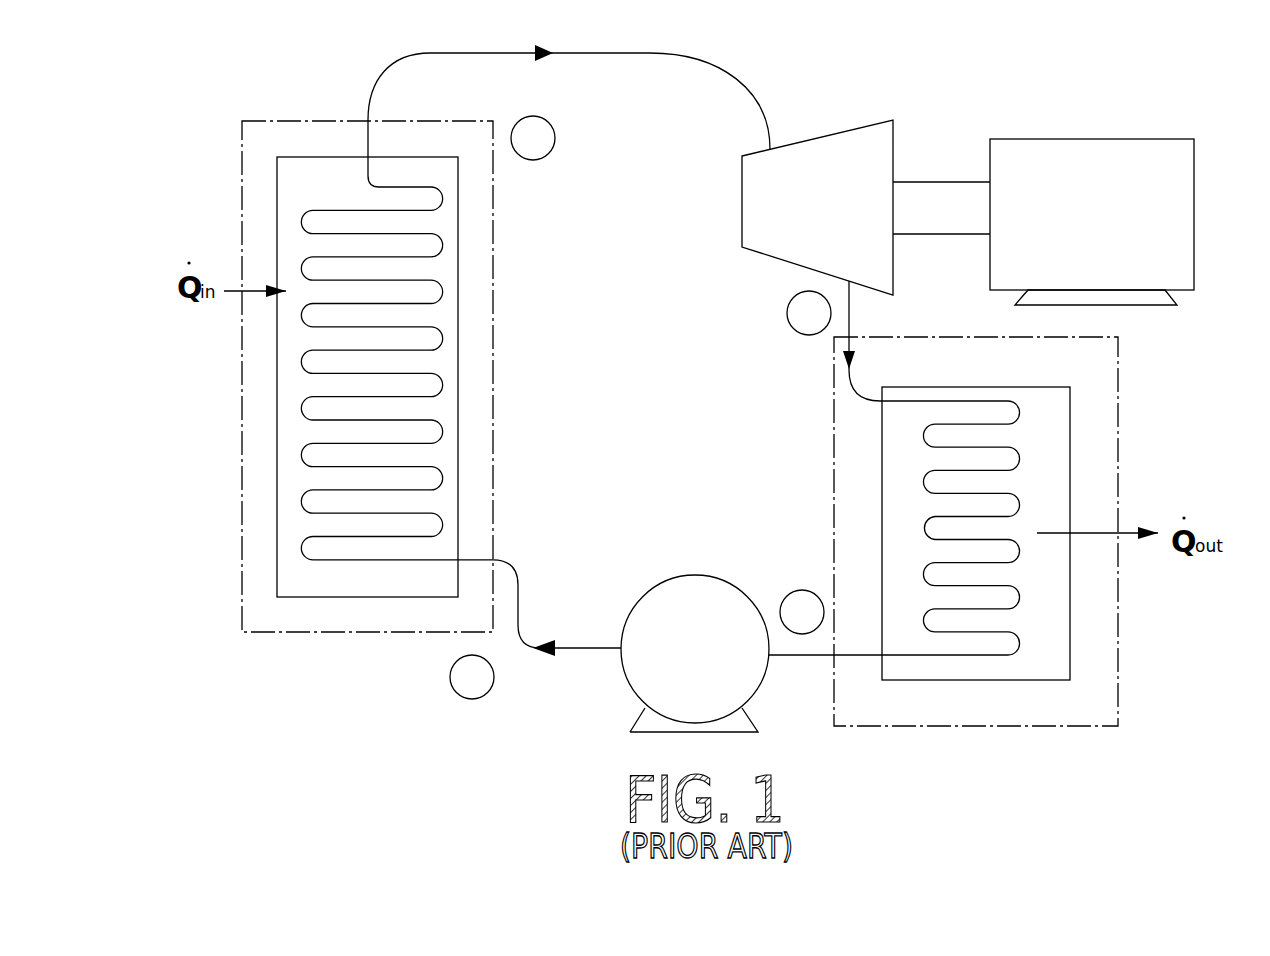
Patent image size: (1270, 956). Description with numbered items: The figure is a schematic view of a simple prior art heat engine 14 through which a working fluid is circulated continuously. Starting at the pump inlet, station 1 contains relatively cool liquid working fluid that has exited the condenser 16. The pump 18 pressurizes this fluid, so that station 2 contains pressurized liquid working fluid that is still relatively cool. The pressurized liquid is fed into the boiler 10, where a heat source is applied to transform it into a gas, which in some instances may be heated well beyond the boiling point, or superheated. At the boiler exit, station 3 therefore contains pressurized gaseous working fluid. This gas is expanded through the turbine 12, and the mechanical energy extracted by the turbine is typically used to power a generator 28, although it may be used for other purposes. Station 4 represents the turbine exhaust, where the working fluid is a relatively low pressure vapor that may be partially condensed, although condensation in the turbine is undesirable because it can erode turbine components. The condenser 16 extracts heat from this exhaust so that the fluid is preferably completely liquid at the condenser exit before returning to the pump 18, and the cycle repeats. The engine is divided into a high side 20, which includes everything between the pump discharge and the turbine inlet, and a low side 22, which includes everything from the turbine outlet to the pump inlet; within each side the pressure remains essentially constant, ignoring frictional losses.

The boiler 10 is at (333, 157).
The turbine 12 is at (858, 163).
The heat engine 14 is at (334, 670).
The condenser 16 is at (1070, 447).
The pump 18 is at (703, 612).
The high side 20 is at (240, 566).
The low side 22 is at (1091, 728).
The generator 28 is at (1113, 168).
The station 1 is at (802, 678).
The station 2 is at (472, 545).
The station 3 is at (347, 137).
The station 4 is at (875, 313).